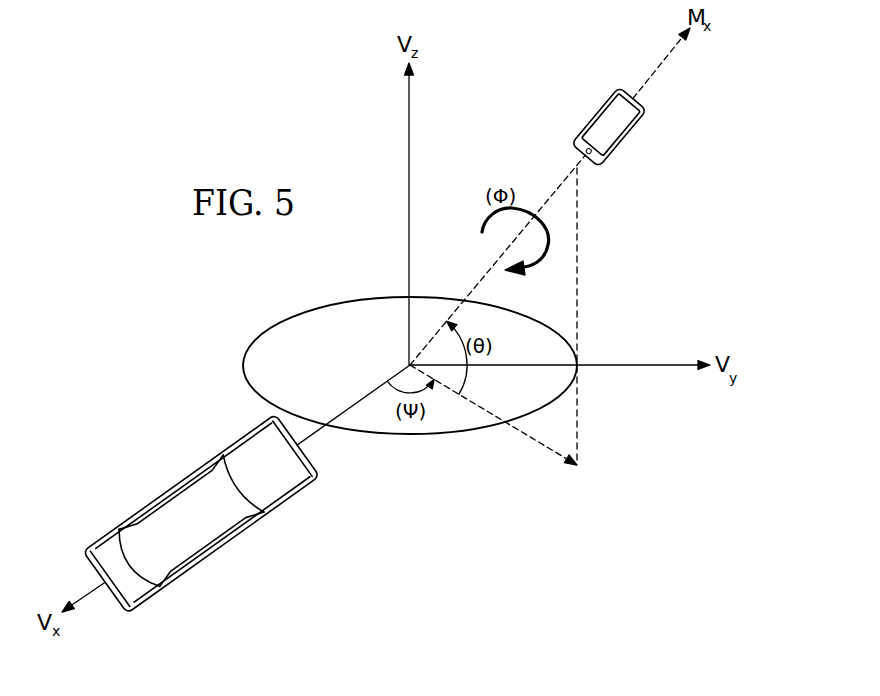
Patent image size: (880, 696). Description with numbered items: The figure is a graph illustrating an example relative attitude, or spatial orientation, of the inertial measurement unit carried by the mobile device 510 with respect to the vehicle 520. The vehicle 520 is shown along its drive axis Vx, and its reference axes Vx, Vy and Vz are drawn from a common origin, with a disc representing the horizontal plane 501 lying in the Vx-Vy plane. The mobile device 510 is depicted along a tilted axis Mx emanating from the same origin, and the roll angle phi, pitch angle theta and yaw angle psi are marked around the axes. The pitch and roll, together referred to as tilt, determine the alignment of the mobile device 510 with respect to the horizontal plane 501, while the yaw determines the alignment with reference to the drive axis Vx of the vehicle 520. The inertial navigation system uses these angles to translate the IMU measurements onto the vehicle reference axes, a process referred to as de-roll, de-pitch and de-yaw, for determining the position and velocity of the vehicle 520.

The horizontal plane 501 is at (243, 363).
The mobile device 510 is at (595, 113).
The vehicle 520 is at (172, 486).